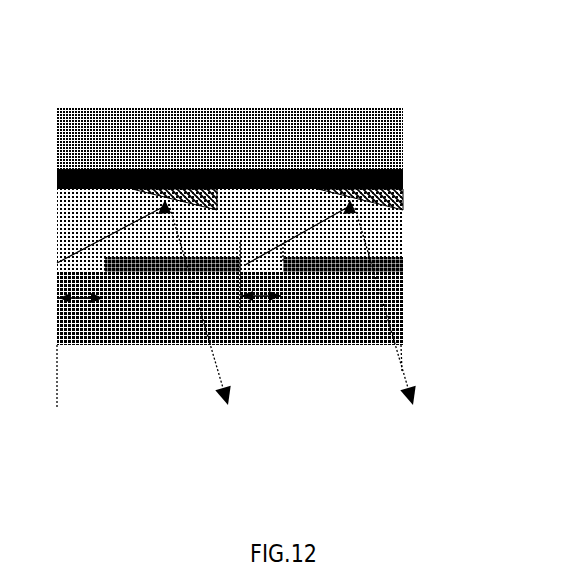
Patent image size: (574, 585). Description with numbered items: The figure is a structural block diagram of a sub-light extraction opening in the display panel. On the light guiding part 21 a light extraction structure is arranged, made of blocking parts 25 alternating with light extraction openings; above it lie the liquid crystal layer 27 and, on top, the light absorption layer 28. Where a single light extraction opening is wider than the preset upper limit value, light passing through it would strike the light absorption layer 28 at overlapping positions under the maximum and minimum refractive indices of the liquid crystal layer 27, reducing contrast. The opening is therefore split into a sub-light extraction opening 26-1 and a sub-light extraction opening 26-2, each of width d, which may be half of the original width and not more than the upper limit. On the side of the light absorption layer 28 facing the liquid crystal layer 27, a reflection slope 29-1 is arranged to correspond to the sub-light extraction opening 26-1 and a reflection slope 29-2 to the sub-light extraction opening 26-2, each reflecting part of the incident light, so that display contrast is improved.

The light guiding part 21 is at (390, 310).
The blocking part 25 is at (403, 267).
The sub-light extraction opening 26-1 is at (90, 268).
The sub-light extraction opening 26-2 is at (270, 265).
The liquid crystal layer 27 is at (390, 222).
The light absorption layer 28 is at (398, 168).
The reflection slope 29-1 is at (168, 172).
The reflection slope 29-2 is at (348, 168).